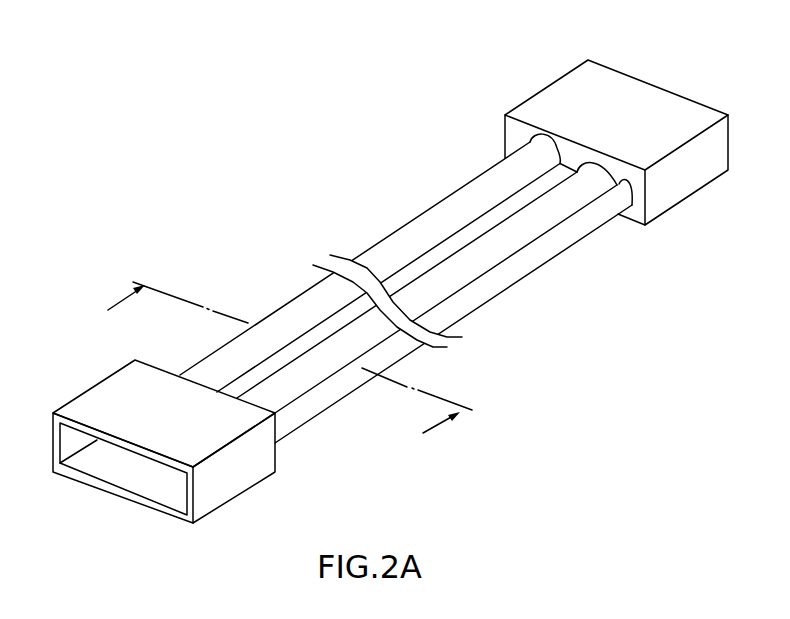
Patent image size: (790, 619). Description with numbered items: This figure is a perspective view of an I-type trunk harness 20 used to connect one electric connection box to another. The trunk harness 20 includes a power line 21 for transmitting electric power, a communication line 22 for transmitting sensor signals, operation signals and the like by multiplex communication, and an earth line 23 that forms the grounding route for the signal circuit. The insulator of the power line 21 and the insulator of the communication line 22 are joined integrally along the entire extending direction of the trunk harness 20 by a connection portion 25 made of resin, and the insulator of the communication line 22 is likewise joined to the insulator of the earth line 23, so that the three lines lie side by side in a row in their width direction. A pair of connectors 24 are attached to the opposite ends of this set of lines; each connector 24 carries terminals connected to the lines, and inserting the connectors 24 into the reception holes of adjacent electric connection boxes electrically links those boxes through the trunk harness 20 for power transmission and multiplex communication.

The trunk harness 20 is at (384, 268).
The power line 21 is at (380, 252).
The communication line 22 is at (503, 244).
The earth line 23 is at (574, 231).
The connector 24 is at (77, 396).
The connection portion 25 is at (443, 252).